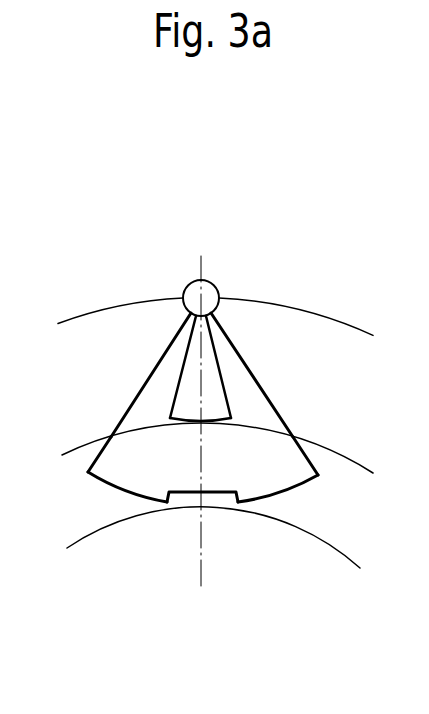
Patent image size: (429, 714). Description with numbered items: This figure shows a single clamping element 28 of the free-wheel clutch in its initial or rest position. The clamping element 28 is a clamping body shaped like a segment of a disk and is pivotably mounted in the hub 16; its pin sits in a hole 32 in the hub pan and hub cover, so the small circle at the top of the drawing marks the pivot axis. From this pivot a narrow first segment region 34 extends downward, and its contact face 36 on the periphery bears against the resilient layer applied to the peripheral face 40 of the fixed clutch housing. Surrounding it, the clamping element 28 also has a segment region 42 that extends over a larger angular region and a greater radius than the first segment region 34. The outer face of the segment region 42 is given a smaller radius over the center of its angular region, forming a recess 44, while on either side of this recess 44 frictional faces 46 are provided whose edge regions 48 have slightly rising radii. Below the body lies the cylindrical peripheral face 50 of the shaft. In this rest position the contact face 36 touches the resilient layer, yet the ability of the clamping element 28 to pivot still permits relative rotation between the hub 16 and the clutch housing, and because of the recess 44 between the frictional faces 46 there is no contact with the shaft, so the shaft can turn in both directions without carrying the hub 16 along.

The hub 16 is at (297, 308).
The clamping element 28 is at (278, 402).
The hole 32 is at (210, 292).
The first segment region 34 is at (190, 370).
The contact face 36 is at (207, 423).
The peripheral face 40 is at (347, 458).
The segment region 42 is at (240, 388).
The recess 44 is at (215, 497).
The frictional face 46 is at (132, 497).
The edge region 48 is at (90, 475).
The cylindrical peripheral face 50 is at (354, 556).